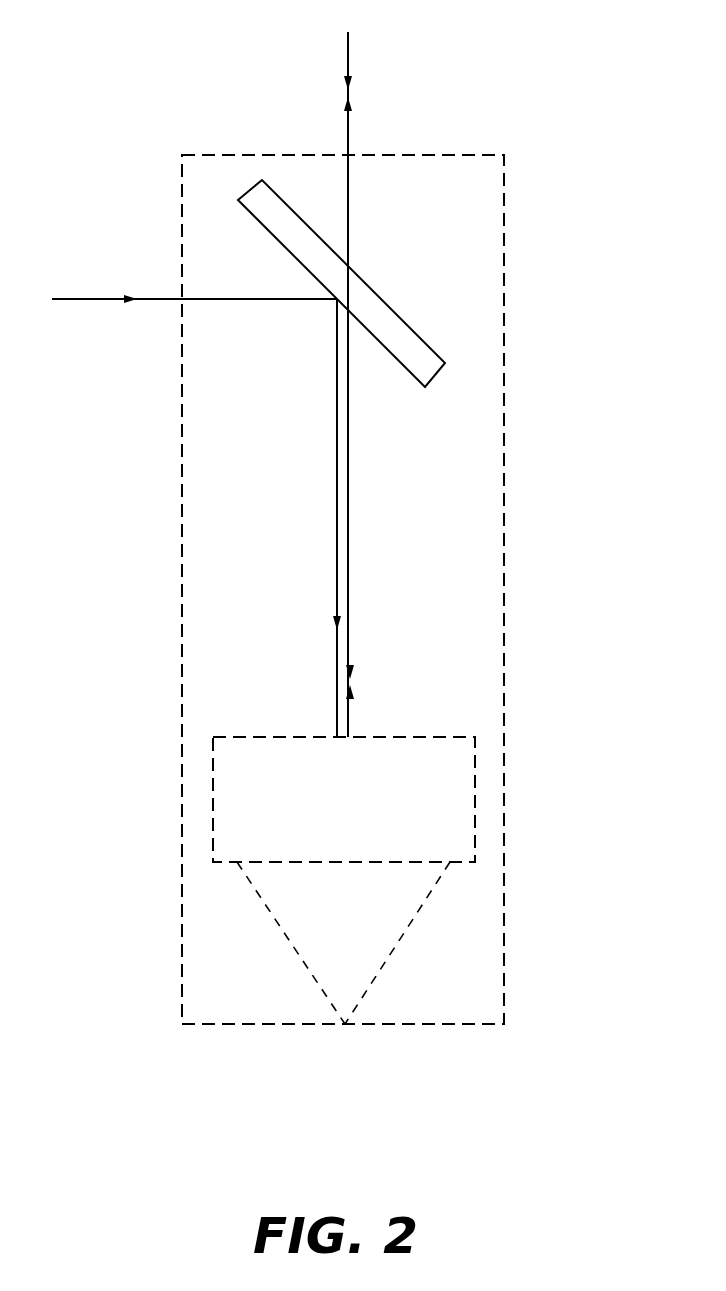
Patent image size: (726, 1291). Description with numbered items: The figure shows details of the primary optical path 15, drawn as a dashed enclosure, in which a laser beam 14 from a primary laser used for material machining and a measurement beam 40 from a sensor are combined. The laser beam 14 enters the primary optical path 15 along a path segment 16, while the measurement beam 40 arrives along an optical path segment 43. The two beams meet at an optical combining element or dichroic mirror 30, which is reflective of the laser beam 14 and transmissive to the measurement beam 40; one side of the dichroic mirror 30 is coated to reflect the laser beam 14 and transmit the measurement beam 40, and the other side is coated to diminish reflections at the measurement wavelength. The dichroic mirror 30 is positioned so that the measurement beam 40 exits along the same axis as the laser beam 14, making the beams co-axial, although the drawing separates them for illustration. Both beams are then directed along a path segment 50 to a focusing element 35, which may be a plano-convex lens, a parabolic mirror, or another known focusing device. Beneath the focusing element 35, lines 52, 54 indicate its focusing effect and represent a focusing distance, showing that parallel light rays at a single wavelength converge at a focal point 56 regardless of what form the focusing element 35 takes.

The laser beam 14 is at (102, 316).
The primary optical path 15 is at (492, 572).
The path segment 16 is at (81, 298).
The dichroic mirror 30 is at (397, 328).
The focusing element 35 is at (463, 787).
The measurement beam 40 is at (352, 52).
The optical path segment 43 is at (348, 62).
The path segment 50 is at (363, 510).
The line 52 is at (405, 933).
The line 54 is at (283, 933).
The focal point 56 is at (345, 1024).